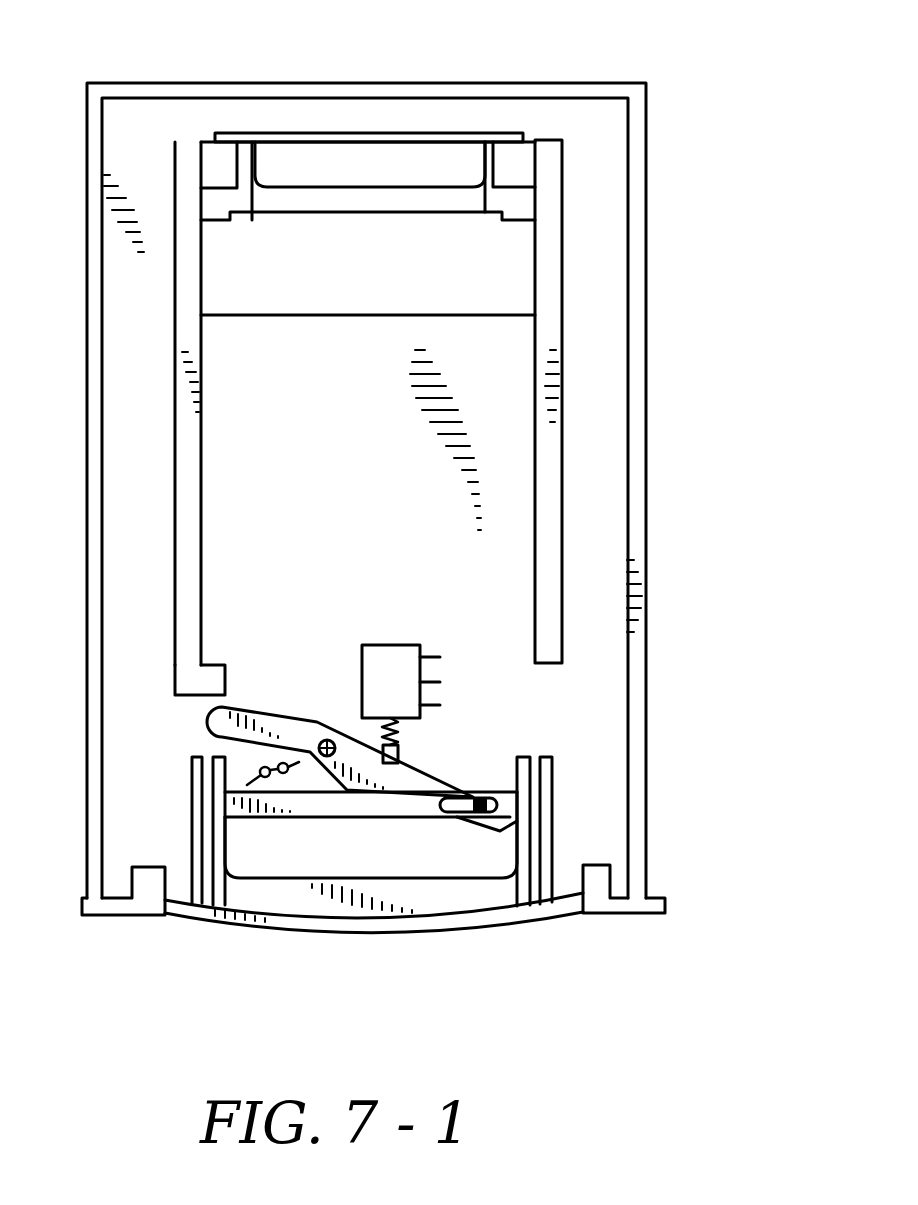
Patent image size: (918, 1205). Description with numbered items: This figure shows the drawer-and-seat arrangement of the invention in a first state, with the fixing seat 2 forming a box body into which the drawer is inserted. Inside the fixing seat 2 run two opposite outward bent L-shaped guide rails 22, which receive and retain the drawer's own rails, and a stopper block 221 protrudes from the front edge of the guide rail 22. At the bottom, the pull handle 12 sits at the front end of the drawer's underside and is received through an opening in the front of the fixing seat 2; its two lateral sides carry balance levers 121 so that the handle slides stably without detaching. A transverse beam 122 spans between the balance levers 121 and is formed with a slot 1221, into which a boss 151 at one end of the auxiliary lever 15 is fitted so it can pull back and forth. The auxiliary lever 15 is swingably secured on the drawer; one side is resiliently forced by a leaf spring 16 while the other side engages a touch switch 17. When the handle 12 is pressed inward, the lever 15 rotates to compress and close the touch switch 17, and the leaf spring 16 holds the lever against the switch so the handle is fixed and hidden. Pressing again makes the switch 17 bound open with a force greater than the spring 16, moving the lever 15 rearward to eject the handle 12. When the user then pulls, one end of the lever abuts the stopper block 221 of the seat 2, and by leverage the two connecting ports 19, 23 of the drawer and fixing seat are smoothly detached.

The fixing seat 2 is at (646, 518).
The pull handle 12 is at (470, 925).
The balance lever 121 is at (553, 815).
The transverse beam 122 is at (344, 808).
The slot 1221 is at (453, 798).
The auxiliary lever 15 is at (275, 728).
The boss 151 is at (483, 797).
The leaf spring 16 is at (292, 763).
The touch switch 17 is at (393, 676).
The connecting port 19 is at (378, 200).
The outward bent L-shaped guide rail 22 is at (193, 492).
The stopper block 221 is at (192, 680).
The connecting port 23 is at (382, 165).